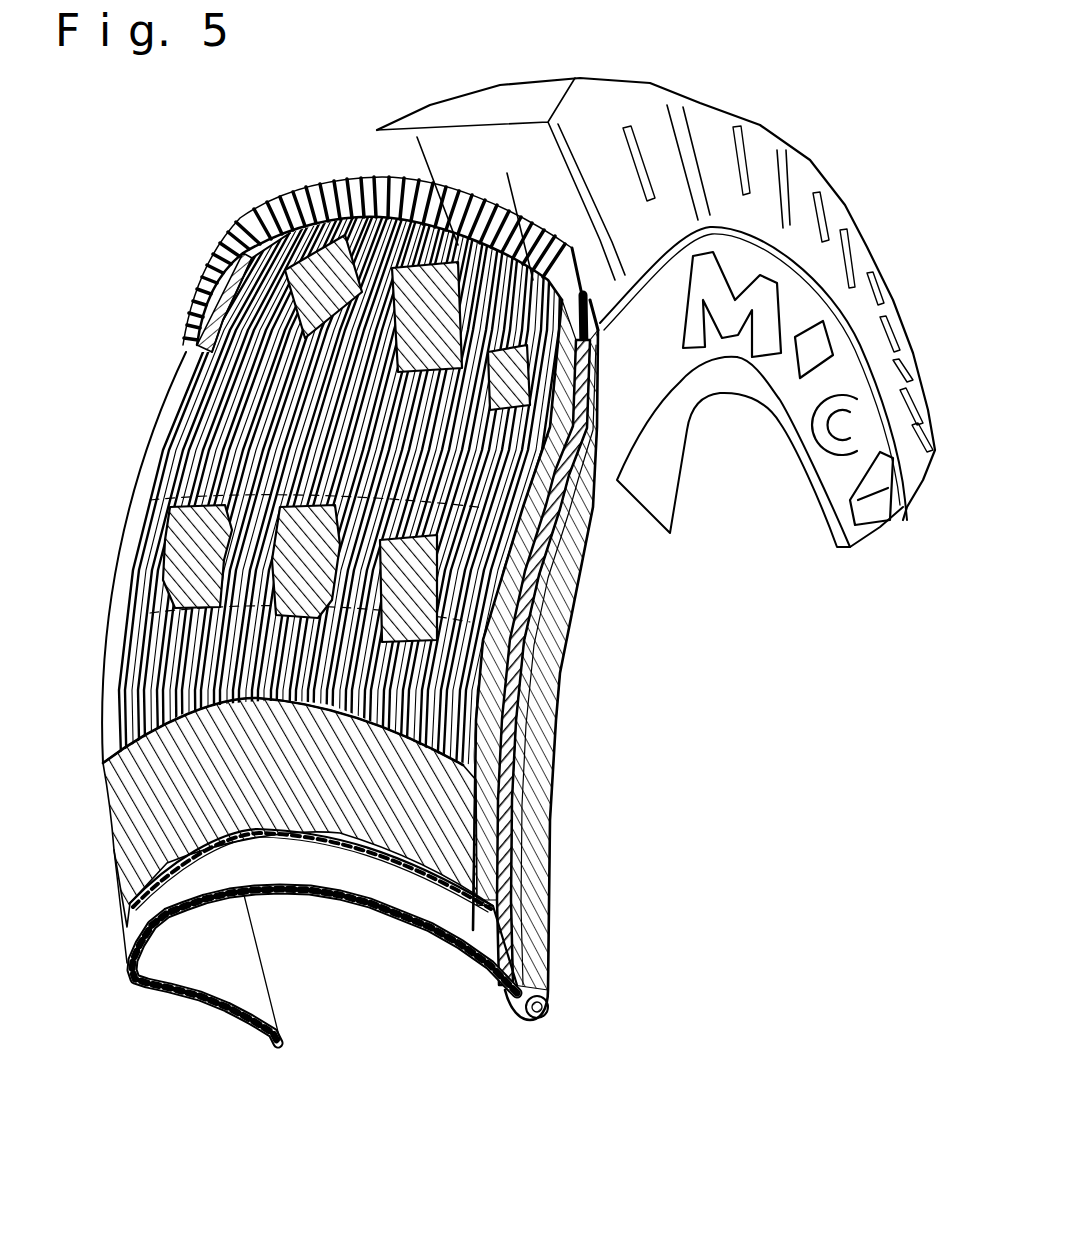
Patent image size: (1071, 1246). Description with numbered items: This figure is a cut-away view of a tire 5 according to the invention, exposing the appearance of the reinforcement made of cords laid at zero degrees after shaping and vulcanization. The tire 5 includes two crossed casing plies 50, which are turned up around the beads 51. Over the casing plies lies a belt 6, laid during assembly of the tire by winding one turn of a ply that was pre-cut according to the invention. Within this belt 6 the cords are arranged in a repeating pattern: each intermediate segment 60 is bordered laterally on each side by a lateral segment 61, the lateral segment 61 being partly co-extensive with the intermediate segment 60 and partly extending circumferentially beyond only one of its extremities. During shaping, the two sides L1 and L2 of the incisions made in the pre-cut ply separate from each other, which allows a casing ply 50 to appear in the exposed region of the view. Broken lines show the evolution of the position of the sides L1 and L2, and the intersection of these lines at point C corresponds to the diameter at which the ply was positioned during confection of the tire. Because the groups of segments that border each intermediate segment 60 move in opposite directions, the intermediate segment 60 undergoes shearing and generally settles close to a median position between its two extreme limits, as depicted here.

The tire 5 is at (807, 157).
The belt 6 is at (217, 660).
The casing plies 50 is at (207, 330).
The beads 51 is at (550, 1007).
The intermediate segment 60 is at (330, 228).
The lateral segment 61 is at (383, 247).
The side of the incision L1 is at (537, 673).
The point of intersection C is at (553, 707).
The side of the incision L2 is at (520, 690).